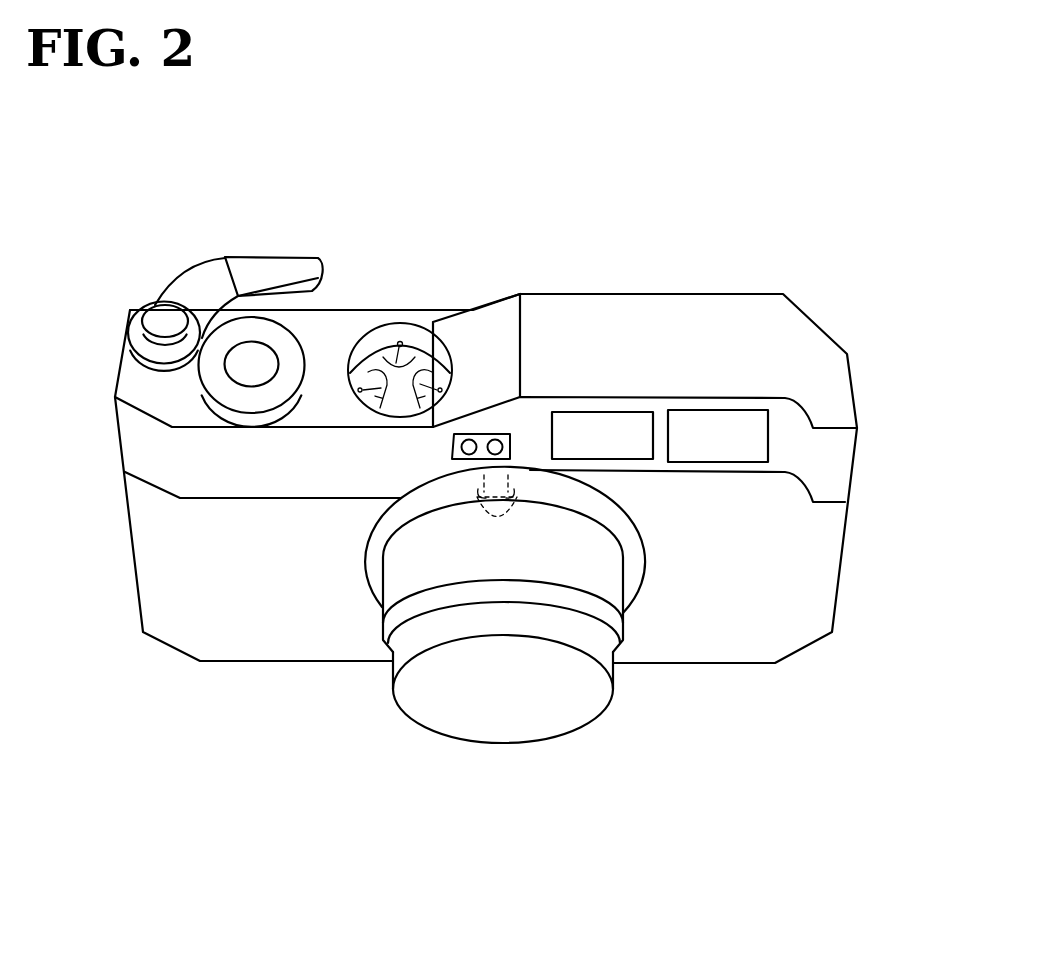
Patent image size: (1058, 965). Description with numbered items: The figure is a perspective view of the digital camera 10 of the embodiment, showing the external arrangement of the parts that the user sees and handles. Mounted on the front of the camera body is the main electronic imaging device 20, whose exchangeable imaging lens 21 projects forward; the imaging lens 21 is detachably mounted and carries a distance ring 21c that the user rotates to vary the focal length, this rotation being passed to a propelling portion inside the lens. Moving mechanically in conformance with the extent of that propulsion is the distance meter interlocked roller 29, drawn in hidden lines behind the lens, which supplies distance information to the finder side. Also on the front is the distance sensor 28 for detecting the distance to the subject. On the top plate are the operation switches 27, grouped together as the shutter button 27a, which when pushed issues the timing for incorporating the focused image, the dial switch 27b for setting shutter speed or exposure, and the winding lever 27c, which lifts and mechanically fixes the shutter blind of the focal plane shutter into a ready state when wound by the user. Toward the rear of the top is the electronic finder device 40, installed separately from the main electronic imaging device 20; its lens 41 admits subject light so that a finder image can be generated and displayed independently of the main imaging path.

The digital camera 10 is at (578, 228).
The main electronic imaging device 20 is at (637, 698).
The imaging lens 21 is at (397, 704).
The distance ring 21c is at (425, 572).
The operation switches 27 is at (388, 147).
The shutter button 27a is at (163, 322).
The dial switch 27b is at (290, 350).
The winding lever 27c is at (273, 277).
The distance sensor 28 is at (480, 438).
The distance meter interlocked roller 29 is at (477, 503).
The electronic finder device 40 is at (725, 440).
The lens 41 is at (730, 422).